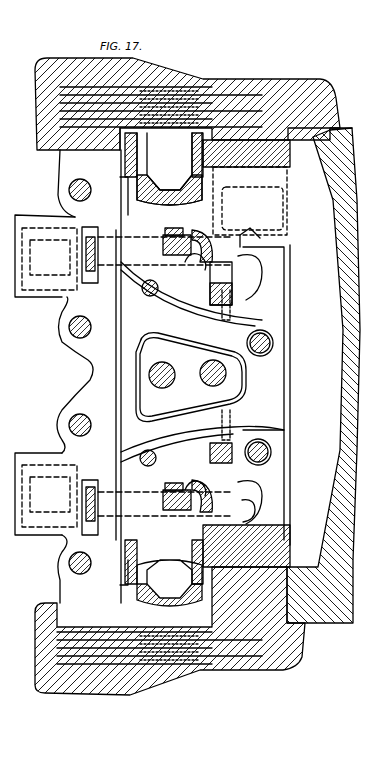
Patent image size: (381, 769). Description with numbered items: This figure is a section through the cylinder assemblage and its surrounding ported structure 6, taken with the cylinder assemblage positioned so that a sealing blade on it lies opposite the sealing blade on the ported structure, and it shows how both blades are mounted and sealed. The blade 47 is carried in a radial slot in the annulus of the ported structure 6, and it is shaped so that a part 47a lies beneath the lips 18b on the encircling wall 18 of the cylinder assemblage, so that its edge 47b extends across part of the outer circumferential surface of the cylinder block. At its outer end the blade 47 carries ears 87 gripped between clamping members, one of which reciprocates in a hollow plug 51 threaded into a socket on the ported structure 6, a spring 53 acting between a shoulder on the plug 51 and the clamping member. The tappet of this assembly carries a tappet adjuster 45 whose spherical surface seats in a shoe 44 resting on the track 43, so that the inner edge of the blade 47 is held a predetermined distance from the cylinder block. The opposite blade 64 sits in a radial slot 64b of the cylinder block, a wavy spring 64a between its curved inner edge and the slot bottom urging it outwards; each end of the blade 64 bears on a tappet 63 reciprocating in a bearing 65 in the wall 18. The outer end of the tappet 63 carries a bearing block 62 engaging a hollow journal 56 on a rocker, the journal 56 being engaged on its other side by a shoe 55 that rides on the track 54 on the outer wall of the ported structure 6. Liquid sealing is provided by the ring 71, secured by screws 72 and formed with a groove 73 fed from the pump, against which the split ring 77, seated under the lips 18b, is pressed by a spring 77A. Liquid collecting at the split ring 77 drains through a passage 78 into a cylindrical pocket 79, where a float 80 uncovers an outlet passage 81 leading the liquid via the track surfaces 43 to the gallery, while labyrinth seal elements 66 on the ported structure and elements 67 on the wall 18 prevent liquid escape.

The ported structure 6 is at (142, 410).
The encircling wall 18 is at (228, 183).
The lip 18b is at (212, 294).
The track 43 is at (290, 247).
The shoe 44 is at (180, 235).
The tappet adjuster 45 is at (170, 240).
The blade 47 is at (207, 339).
The blade part 47a is at (290, 414).
The blade edge 47b is at (290, 380).
The hollow plug 51 is at (22, 224).
The spring 53 is at (55, 224).
The track 54 is at (124, 152).
The shoe 55 is at (125, 153).
The hollow journal 56 is at (141, 154).
The bearing block 62 is at (180, 595).
The tappet 63 is at (280, 152).
The blade 64 is at (293, 350).
The wavy spring 64a is at (352, 337).
The radial slot 64b is at (347, 308).
The bearing 65 is at (283, 170).
The labyrinth seal element 66 is at (78, 108).
The labyrinth seal element 67 is at (233, 94).
The ring 71 is at (200, 303).
The screw 72 is at (220, 423).
The groove 73 is at (263, 335).
The split ring 77 is at (268, 272).
The spring 77A is at (250, 496).
The passage 78 is at (213, 263).
The cylindrical pocket 79 is at (205, 236).
The float 80 is at (265, 200).
The outlet passage 81 is at (256, 228).
The ear 87 is at (112, 240).